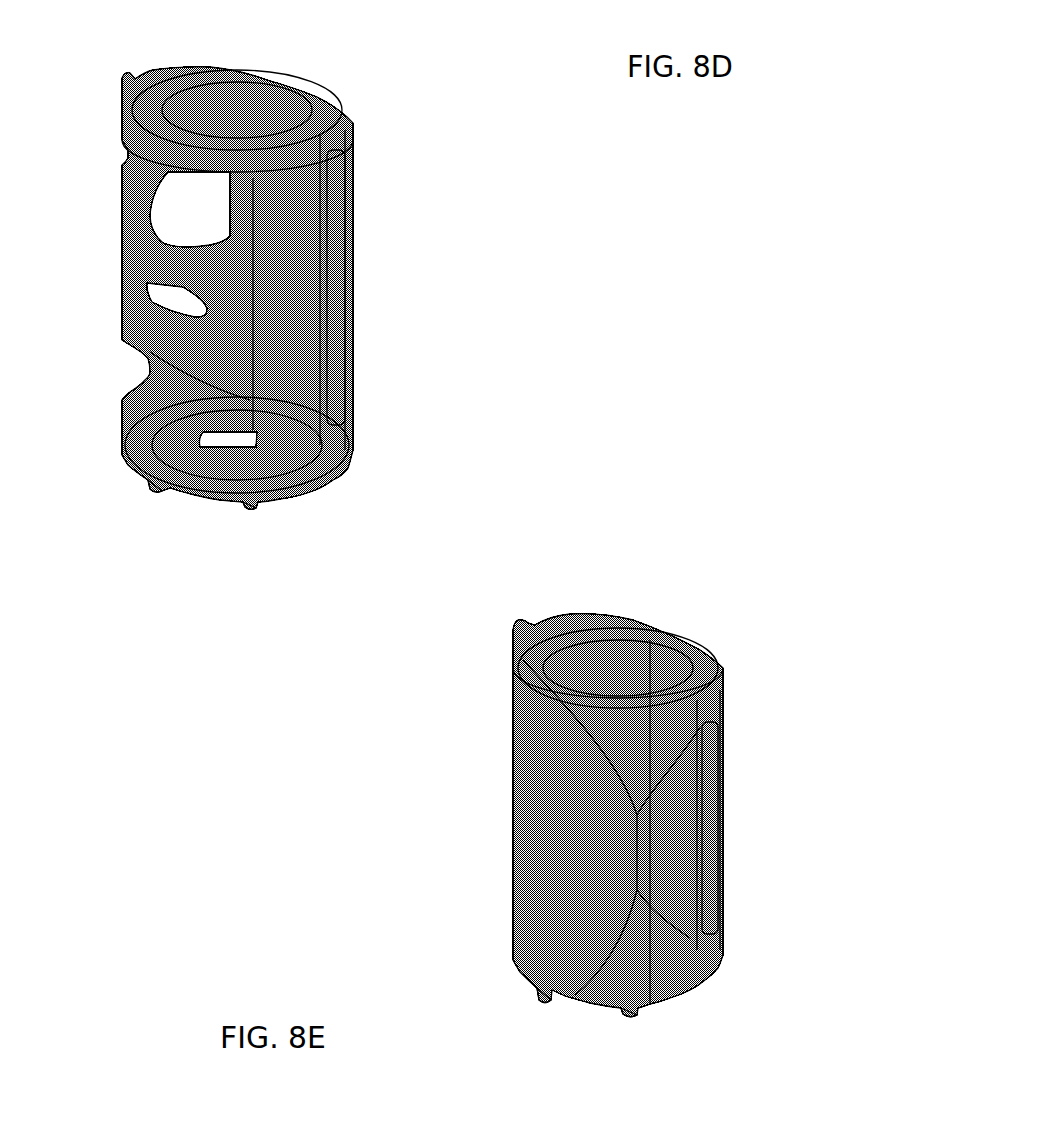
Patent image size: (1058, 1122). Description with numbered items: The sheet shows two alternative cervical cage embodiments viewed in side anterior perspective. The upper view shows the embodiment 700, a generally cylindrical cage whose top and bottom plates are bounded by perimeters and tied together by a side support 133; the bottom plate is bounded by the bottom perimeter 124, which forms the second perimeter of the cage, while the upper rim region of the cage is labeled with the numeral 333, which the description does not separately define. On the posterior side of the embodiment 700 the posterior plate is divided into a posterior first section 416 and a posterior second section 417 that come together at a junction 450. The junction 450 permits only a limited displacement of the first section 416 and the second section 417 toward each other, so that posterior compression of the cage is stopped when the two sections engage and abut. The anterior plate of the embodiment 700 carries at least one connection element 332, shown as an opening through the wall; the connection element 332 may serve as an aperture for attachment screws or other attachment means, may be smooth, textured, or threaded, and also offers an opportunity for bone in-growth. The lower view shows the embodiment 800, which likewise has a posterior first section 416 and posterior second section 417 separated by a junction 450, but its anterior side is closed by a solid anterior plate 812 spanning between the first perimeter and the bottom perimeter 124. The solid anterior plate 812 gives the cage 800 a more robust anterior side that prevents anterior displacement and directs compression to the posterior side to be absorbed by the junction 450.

In FIG. 8D, the embodiment of a cervical cage 700 is at (71, 102).
In FIG. 8D, the upper end plate 333 is at (343, 112).
In FIG. 8D, the connection element 332 is at (143, 300).
In FIG. 8D, the posterior first section 416 is at (350, 227).
In FIG. 8E, the posterior first section 416 is at (722, 760).
In FIG. 8D, the junction 450 is at (352, 296).
In FIG. 8E, the junction 450 is at (737, 817).
In FIG. 8D, the posterior second section 417 is at (352, 347).
In FIG. 8E, the posterior second section 417 is at (722, 857).
In FIG. 8D, the side support 133 is at (320, 482).
In FIG. 8D, the bottom perimeter 124 is at (205, 478).
In FIG. 8E, the bottom perimeter 124 is at (643, 1012).
In FIG. 8E, the embodiment of a cervical cage 800 is at (752, 643).
In FIG. 8E, the solid anterior plate 812 is at (550, 804).